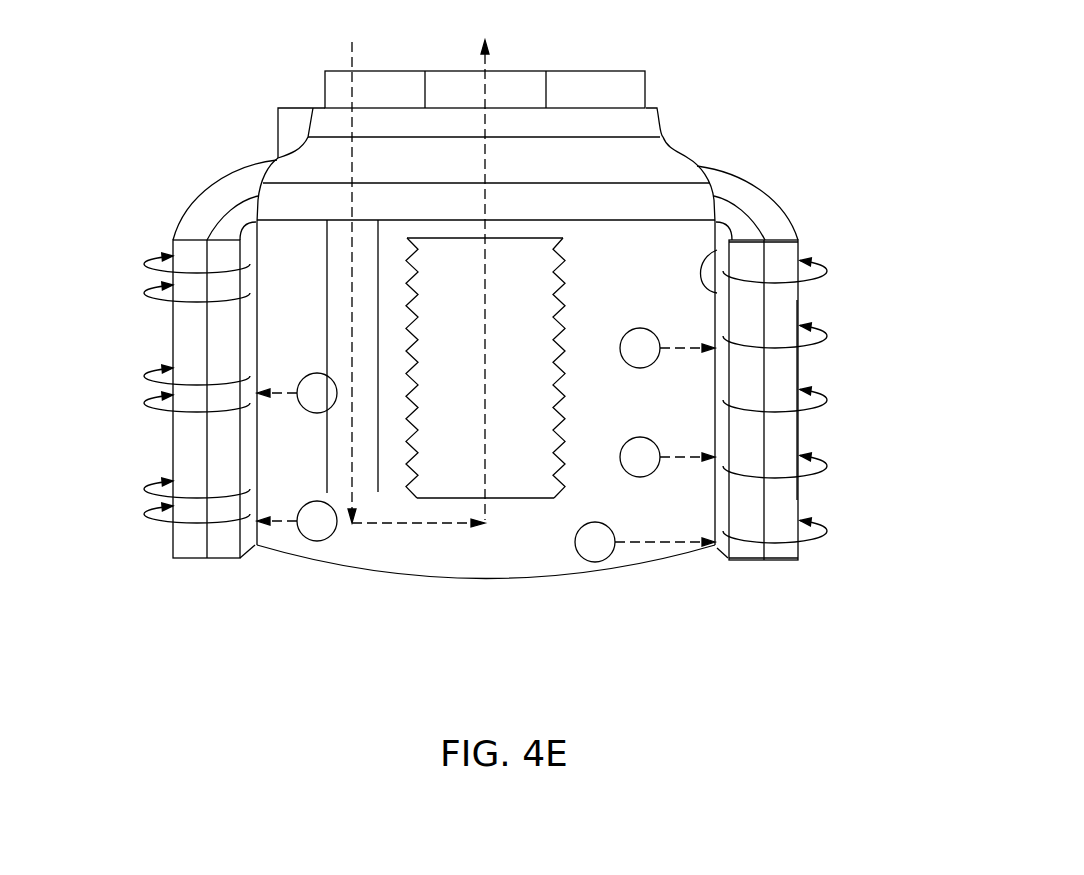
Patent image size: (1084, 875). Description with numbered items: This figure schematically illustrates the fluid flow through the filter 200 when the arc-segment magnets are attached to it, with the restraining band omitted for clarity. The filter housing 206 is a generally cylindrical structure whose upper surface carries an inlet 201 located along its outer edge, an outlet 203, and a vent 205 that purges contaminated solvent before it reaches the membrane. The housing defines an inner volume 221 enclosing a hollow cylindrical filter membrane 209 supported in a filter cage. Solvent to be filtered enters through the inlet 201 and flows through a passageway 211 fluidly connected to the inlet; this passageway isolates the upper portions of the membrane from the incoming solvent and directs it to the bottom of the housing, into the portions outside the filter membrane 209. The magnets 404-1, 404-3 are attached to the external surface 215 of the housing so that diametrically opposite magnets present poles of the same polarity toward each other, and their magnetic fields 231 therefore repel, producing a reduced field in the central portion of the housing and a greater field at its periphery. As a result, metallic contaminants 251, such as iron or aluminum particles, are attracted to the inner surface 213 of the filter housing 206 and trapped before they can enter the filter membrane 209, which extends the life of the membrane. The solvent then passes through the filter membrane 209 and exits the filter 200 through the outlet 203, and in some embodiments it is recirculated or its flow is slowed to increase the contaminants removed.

The filter 200 is at (673, 148).
The inlet 201 is at (352, 265).
The outlet 203 is at (430, 267).
The vent 205 is at (607, 81).
The filter housing 206 is at (787, 438).
The filter membrane 209 is at (517, 483).
The passageway 211 is at (382, 404).
The inner surface 213 is at (800, 245).
The external surface 215 is at (805, 515).
The inner volume 221 is at (697, 242).
The magnetic fields 231 is at (162, 305).
The metallic contaminants 251 is at (317, 413).
The magnet 404-1 is at (783, 372).
The magnet 404-3 is at (180, 443).